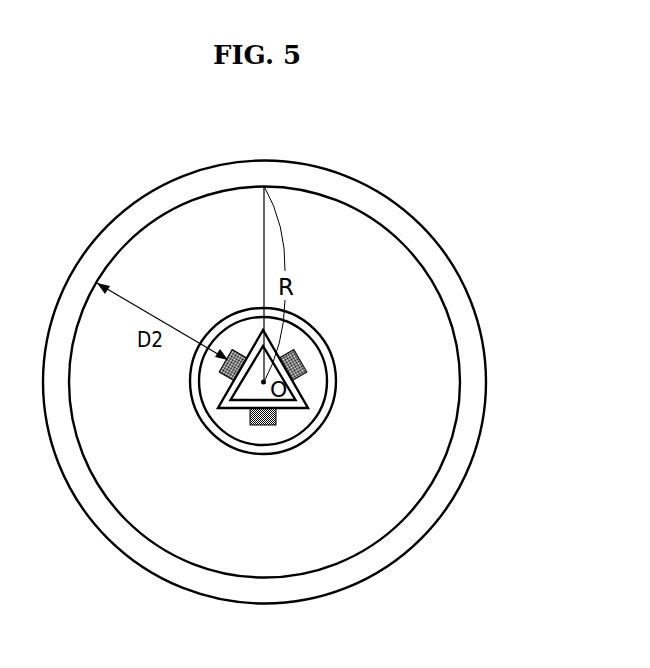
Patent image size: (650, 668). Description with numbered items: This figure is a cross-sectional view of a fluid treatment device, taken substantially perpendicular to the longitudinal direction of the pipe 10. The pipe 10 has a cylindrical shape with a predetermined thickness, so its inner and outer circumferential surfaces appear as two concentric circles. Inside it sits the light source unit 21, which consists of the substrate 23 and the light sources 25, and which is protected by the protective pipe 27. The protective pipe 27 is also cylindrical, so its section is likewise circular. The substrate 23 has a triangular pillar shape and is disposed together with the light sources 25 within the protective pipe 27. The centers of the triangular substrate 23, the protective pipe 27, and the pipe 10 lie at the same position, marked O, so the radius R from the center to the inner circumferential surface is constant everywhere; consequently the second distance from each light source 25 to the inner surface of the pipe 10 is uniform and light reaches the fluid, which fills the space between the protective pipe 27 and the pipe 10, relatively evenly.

The pipe 10 is at (341, 170).
The light source unit 21 is at (314, 364).
The substrate 23 is at (303, 388).
The light source 25 is at (301, 361).
The protective pipe 27 is at (317, 328).